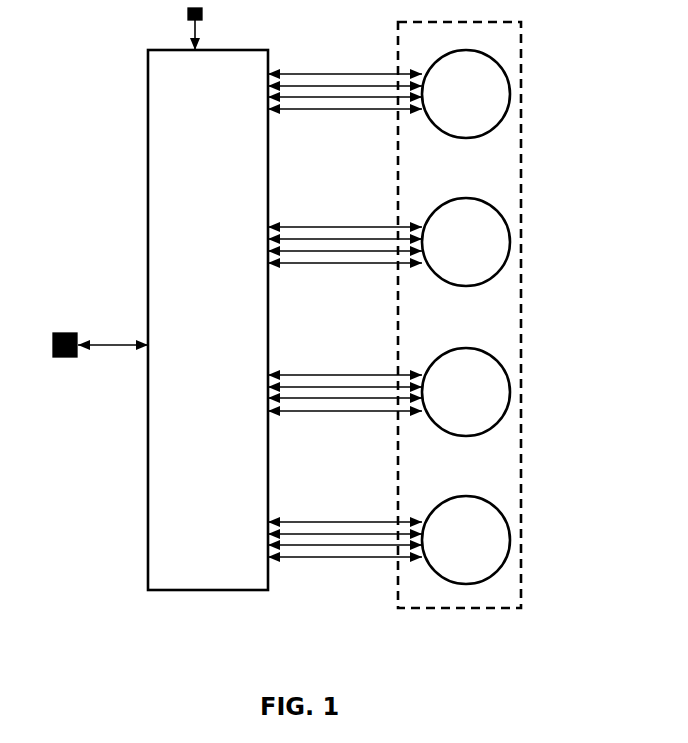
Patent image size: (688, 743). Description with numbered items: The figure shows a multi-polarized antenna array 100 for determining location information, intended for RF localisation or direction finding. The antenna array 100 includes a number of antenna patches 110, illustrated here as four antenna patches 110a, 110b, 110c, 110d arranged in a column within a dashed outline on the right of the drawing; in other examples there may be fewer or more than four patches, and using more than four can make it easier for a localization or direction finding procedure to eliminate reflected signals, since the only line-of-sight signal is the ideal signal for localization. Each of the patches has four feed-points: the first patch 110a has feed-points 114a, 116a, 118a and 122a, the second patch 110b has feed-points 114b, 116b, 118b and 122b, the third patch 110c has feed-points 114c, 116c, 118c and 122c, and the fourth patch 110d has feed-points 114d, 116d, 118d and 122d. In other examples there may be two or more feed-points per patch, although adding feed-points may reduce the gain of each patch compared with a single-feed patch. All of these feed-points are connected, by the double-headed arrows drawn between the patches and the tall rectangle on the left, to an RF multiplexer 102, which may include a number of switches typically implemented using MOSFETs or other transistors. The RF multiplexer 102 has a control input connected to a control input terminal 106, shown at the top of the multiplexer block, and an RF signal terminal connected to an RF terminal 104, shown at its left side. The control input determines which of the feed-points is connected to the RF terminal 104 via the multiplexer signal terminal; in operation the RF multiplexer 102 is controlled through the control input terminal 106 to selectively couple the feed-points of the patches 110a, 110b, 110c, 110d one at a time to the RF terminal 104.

The antenna array 100 is at (305, 667).
The RF multiplexer 102 is at (190, 362).
The RF terminal 104 is at (54, 357).
The control input terminal 106 is at (190, 23).
The antenna patches 110 is at (523, 415).
The antenna patch 110a is at (447, 104).
The antenna patch 110b is at (447, 252).
The antenna patch 110c is at (447, 402).
The antenna patch 110d is at (447, 550).
The feed-point 114a is at (332, 72).
The feed-point 116a is at (355, 88).
The feed-point 118a is at (352, 100).
The feed-point 122a is at (384, 110).
The feed-point 114b is at (337, 225).
The feed-point 116b is at (348, 237).
The feed-point 118b is at (320, 250).
The feed-point 122b is at (377, 263).
The feed-point 114c is at (317, 373).
The feed-point 116c is at (348, 385).
The feed-point 118c is at (307, 398).
The feed-point 122c is at (378, 410).
The feed-point 114d is at (330, 520).
The feed-point 116d is at (348, 532).
The feed-point 118d is at (320, 547).
The feed-point 122d is at (343, 558).